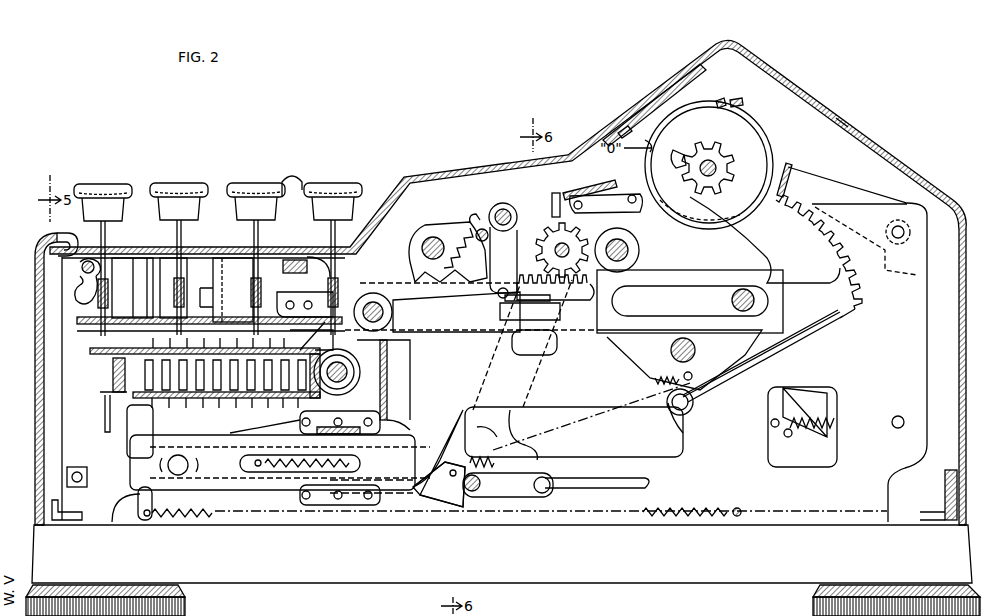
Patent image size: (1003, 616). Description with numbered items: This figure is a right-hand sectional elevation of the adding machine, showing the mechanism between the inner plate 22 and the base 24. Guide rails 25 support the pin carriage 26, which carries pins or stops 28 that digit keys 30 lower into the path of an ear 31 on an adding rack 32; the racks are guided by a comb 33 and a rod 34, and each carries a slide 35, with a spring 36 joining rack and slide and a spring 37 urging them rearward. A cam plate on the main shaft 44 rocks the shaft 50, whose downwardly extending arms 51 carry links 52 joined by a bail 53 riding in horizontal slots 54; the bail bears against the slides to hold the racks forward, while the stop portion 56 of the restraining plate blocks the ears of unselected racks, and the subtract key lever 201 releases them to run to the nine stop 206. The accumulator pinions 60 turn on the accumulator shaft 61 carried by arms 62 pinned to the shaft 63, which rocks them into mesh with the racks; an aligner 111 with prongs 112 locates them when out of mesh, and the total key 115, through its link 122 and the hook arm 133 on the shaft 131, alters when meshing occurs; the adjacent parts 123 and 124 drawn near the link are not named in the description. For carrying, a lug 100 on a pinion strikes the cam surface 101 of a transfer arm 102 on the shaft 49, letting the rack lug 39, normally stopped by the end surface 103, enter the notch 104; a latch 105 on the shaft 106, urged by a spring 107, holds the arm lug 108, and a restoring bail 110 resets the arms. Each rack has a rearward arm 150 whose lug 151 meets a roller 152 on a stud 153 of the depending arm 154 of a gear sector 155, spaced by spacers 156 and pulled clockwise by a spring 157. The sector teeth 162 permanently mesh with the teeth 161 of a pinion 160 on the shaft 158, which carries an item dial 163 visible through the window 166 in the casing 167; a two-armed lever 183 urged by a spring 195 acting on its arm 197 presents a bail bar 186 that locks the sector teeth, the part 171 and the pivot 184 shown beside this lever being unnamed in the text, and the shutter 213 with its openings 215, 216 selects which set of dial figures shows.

The inner plate 22 is at (927, 347).
The base 24 is at (666, 583).
The guide rails 25 is at (113, 375).
The pin carriage 26 is at (213, 405).
The pins or stops 28 is at (188, 408).
The digit keys 30 is at (233, 183).
The stop or ear 31 is at (108, 428).
The adding rack 32 is at (416, 488).
The comb 33 is at (394, 355).
The rod 34 is at (732, 300).
The slide 35 is at (441, 505).
The spring 36 is at (270, 466).
The spring 37 is at (710, 516).
The lug 39 is at (560, 347).
The main shaft 44 is at (670, 355).
The shaft 49 is at (380, 296).
The shaft 50 is at (639, 250).
The arms 51 is at (548, 452).
The link 52 is at (525, 498).
The bail 53 is at (474, 492).
The horizontal slots 54 is at (630, 478).
The stop portion 56 is at (130, 415).
The pinions 60 is at (577, 240).
The accumulator shaft 61 is at (560, 243).
The arms 62 is at (452, 225).
The shaft 63 is at (432, 237).
The lug 100 is at (528, 272).
The cam surface 101 is at (560, 301).
The transfer pawl or arm 102 is at (445, 328).
The end surface 103 is at (505, 322).
The notch 104 is at (514, 300).
The latch 105 is at (510, 247).
The shaft 106 is at (500, 203).
The spring 107 is at (482, 241).
The lug 108 is at (498, 294).
The restoring bail 110 is at (470, 216).
The aligner 111 is at (582, 188).
The prongs 112 is at (555, 193).
The total key 115 is at (115, 184).
The link 122 is at (210, 290).
The plate 123 is at (300, 286).
The bracket 124 is at (308, 326).
The shaft 131 is at (80, 268).
The hook arm 133 is at (78, 300).
The arm 150 is at (627, 414).
The lug 151 is at (686, 433).
The roller 152 is at (692, 410).
The stud 153 is at (690, 400).
The depending arm 154 is at (740, 352).
The gear sector 155 is at (846, 318).
The spacers 156 is at (718, 312).
The spring 157 is at (535, 412).
The shaft 158 is at (726, 158).
The pinions 160 is at (728, 170).
The teeth 161 is at (683, 160).
The teeth 162 is at (863, 290).
The item dial 163 is at (766, 140).
The window 166 is at (696, 72).
The casing 167 is at (843, 118).
The wedge 171 is at (830, 410).
The two-armed lever 183 is at (828, 192).
The pivot 184 is at (898, 226).
The bail bar 186 is at (792, 172).
The spring 195 is at (838, 428).
The arm 197 is at (775, 407).
The subtract key lever 201 is at (298, 184).
The nine stop 206 is at (298, 410).
The dial shield or shutter 213 is at (720, 99).
The slot or opening 215 is at (655, 103).
The slot or opening 216 is at (740, 103).